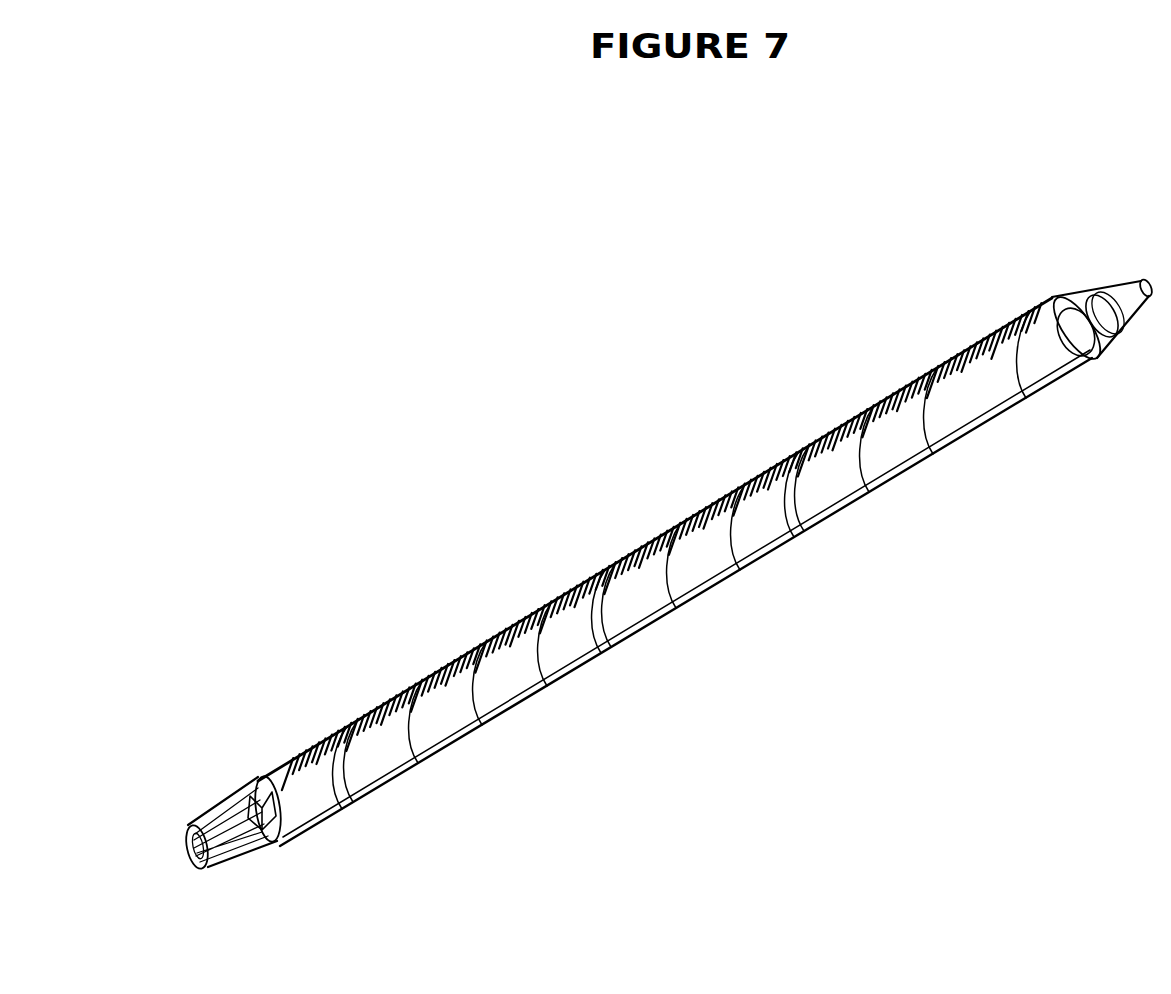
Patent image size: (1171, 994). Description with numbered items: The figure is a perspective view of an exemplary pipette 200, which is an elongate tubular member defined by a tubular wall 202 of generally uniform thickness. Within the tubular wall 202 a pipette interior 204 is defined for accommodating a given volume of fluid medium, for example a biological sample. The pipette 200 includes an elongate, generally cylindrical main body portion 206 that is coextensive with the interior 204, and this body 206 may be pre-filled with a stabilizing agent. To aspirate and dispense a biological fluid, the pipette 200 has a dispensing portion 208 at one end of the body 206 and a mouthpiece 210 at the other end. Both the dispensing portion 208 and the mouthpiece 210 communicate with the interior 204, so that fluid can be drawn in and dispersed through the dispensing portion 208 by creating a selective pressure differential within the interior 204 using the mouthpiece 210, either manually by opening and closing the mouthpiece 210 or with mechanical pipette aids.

The pipette 200 is at (900, 430).
The tubular wall 202 is at (722, 550).
The pipette interior 204 is at (525, 670).
The main body portion 206 is at (572, 594).
The dispensing portion 208 is at (258, 851).
The mouthpiece 210 is at (1140, 274).